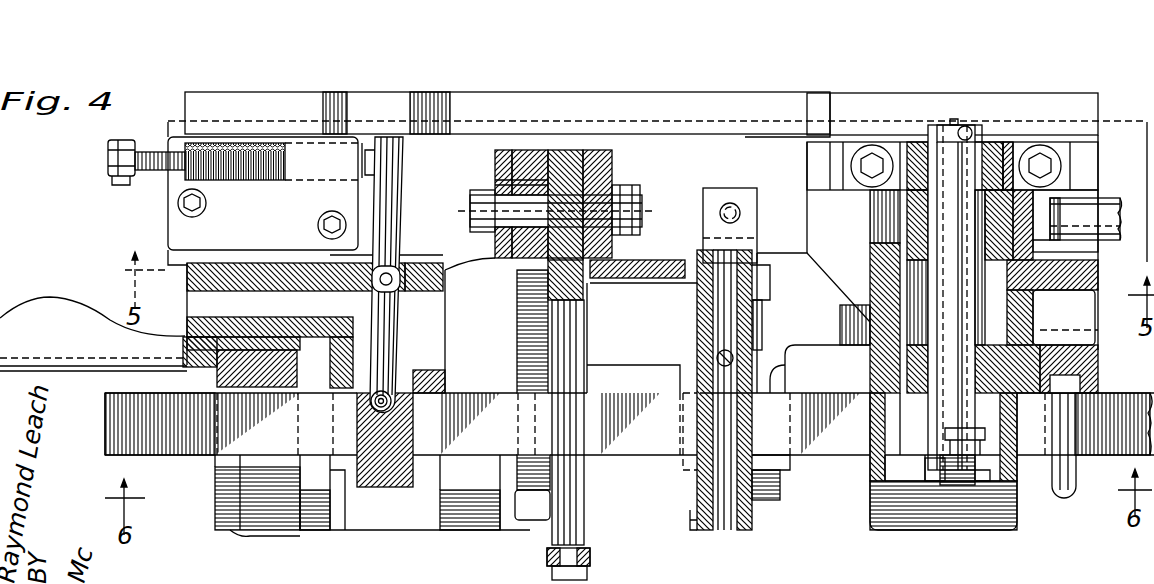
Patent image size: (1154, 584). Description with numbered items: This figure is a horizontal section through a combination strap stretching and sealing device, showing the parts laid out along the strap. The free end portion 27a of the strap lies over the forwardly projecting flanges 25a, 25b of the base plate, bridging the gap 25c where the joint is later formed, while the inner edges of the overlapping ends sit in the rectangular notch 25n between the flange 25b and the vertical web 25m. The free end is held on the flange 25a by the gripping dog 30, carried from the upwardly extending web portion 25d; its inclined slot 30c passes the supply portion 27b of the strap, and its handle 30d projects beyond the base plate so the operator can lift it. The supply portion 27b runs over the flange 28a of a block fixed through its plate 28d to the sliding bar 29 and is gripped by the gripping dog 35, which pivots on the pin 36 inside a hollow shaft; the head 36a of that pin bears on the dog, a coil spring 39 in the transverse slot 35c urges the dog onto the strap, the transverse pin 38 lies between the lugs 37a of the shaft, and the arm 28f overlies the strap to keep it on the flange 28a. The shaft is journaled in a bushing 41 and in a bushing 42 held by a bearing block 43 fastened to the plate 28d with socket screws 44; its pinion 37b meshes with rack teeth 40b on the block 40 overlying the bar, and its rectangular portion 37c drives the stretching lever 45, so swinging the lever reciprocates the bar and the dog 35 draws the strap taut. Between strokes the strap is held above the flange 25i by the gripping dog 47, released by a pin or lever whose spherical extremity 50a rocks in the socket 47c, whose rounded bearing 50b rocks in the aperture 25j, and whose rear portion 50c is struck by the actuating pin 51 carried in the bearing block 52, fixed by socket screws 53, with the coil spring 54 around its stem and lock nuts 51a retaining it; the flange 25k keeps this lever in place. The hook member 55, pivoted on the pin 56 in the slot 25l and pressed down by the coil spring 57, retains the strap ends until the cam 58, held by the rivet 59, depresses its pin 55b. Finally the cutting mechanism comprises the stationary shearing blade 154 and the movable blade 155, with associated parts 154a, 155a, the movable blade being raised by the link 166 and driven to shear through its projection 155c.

The flange 25k is at (398, 84).
The sliding bar 29 is at (170, 122).
The horizontally extending flange or plate 28d is at (815, 152).
The bearing block 43 is at (1013, 141).
The socket screws 44 is at (1043, 157).
The bearing block 52 is at (263, 193).
The socket screws 53 is at (190, 203).
The coil spring 54 is at (237, 145).
The actuating pin 51 is at (148, 150).
The lock nuts 51a is at (120, 182).
The upwardly extending web portion 25d is at (190, 323).
The aperture 25j is at (406, 265).
The socket 47c is at (447, 400).
The handle 30d is at (62, 312).
The gripping dog 47 is at (401, 488).
The rear portion of pin or lever 50c is at (398, 187).
The rounded bearing portion 50b is at (408, 302).
The spherical extremity 50a is at (389, 392).
The shearing blade 154 is at (527, 148).
The movable shearing blade 155 is at (590, 148).
The hub sleeve 154a is at (518, 480).
The shaft 155a is at (583, 470).
The link 166 is at (590, 554).
The projection 155c is at (574, 572).
The gap 25c is at (636, 360).
The rectangular notch 25n is at (700, 385).
The cam 58 is at (718, 211).
The rivet 59 is at (812, 206).
The rack teeth 40b is at (871, 358).
The hook member 55 is at (722, 520).
The pin 55b is at (753, 293).
The pin 56 is at (762, 327).
The coil spring 57 is at (733, 359).
The slot 25l is at (698, 494).
The vertical flange or web 25m is at (706, 527).
The forwardly projecting flange 25b is at (760, 512).
The lugs 37a is at (940, 130).
The pin 36 is at (965, 126).
The transverse pin 38 is at (989, 150).
The bushing 42 is at (1002, 148).
The pinion 37b is at (1060, 350).
The rectangular portion of shaft 37c is at (1040, 300).
The block 40 is at (1082, 326).
The bushing 41 is at (1005, 366).
The stretching lever 45 is at (1014, 206).
The free end portion of strap 27a is at (118, 417).
The gripping dog 30 is at (227, 522).
The inclined slot 30c is at (232, 462).
The supply end portion of strap 27b is at (206, 446).
The flange 25i is at (363, 518).
The forwardly projecting flange 25a is at (482, 526).
The flange 28a is at (882, 501).
The gripping dog 35 is at (913, 481).
The head of pin 36a is at (946, 491).
The transverse slot 35c is at (940, 443).
The coil spring 39 is at (965, 459).
The forwardly projecting arm 28f is at (1072, 479).